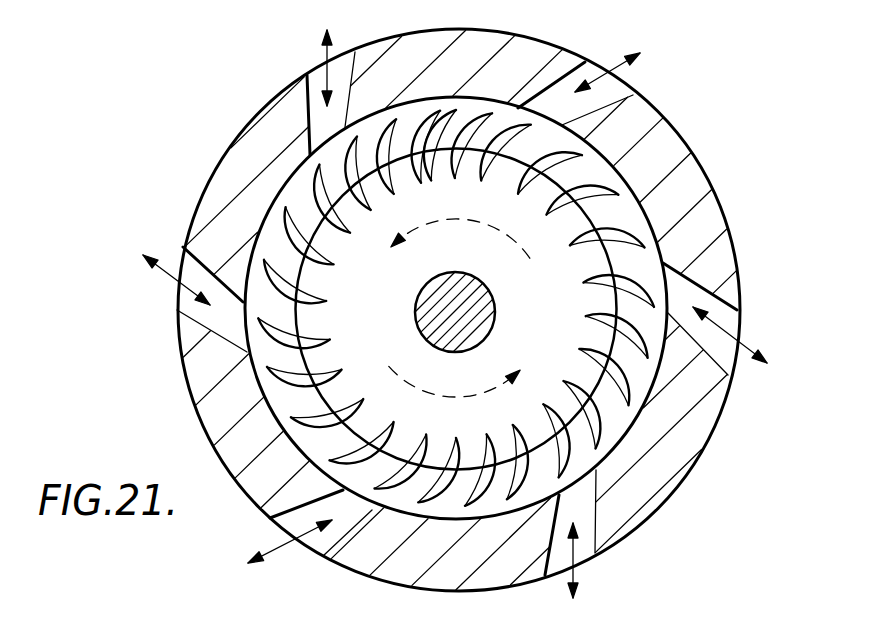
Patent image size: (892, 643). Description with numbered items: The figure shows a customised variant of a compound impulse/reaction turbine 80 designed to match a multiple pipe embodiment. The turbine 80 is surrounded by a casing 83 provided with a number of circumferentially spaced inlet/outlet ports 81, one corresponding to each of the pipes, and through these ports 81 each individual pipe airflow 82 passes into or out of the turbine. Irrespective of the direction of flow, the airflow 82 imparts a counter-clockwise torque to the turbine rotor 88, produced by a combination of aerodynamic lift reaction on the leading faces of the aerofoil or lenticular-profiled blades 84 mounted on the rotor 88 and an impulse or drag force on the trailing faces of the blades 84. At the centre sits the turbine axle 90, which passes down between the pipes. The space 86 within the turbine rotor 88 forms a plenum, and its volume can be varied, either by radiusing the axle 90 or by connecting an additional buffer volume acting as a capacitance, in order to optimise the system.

The compound impulse/reaction turbine 80 is at (698, 108).
The inlet/outlet ports 81 is at (703, 277).
The pipe airflow 82 is at (323, 72).
The casing 83 is at (707, 390).
The blades 84 is at (630, 430).
The space within the turbine rotor 86 is at (563, 220).
The turbine rotor 88 is at (543, 178).
The turbine axle 90 is at (478, 328).